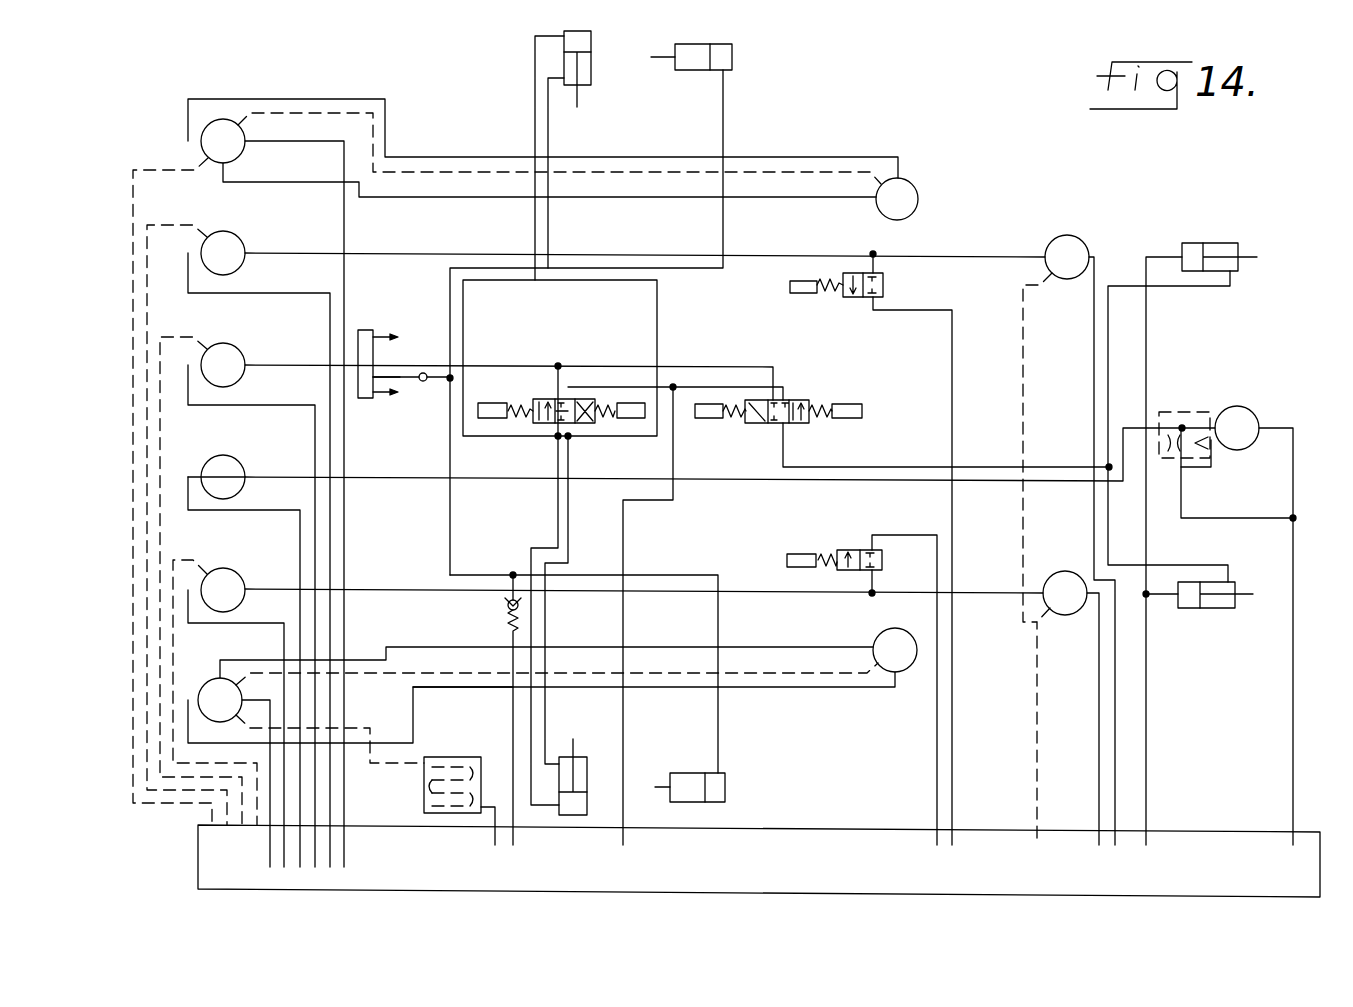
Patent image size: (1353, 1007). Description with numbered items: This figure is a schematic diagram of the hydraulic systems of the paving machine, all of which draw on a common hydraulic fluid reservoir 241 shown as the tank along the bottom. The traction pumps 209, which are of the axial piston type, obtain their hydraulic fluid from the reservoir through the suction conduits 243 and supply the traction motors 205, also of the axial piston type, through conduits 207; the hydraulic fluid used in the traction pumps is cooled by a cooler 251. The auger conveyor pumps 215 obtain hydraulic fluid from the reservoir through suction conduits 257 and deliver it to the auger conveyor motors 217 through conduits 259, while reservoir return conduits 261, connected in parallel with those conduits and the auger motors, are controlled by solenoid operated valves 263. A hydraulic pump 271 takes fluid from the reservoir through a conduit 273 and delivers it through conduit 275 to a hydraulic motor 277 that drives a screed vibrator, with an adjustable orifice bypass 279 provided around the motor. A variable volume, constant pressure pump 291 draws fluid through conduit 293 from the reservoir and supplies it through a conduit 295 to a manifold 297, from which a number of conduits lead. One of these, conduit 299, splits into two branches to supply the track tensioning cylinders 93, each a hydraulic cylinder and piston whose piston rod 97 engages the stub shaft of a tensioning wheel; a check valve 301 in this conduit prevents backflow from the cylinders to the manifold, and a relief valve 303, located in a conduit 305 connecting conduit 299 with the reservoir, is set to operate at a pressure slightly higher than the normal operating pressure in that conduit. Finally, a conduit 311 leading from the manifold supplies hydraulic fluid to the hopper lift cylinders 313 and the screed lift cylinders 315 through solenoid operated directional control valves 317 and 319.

The hydraulic cylinder and piston 93 is at (732, 55).
The piston rod 97 is at (660, 60).
The traction motors 205 is at (916, 192).
The conduits 207 is at (505, 157).
The traction pumps 209 is at (204, 147).
The auger conveyor pumps 215 is at (238, 247).
The auger conveyor motors 217 is at (1080, 240).
The hydraulic fluid reservoir 241 is at (895, 790).
The suction conduits 243 is at (344, 240).
The cooler 251 is at (422, 798).
The suction conduits 257 is at (272, 308).
The conduits 259 is at (795, 258).
The reservoir return conduits 261 is at (935, 505).
The solenoid operated valves 263 is at (883, 290).
The hydraulic pump 271 is at (238, 471).
The conduit 273 is at (276, 516).
The conduit 275 is at (465, 498).
The hydraulic motor 277 is at (1250, 410).
The adjustable orifice bypass 279 is at (1200, 465).
The variable volume, constant pressure pump 291 is at (238, 359).
The conduit 293 is at (292, 414).
The conduit 295 is at (312, 376).
The manifold 297 is at (365, 330).
The conduit 299 is at (382, 398).
The check valve 301 is at (423, 382).
The relief valve 303 is at (506, 604).
The conduit 305 is at (513, 712).
The conduit 311 is at (630, 370).
The hopper lift cylinders 313 is at (591, 37).
The screed lift cylinders 315 is at (1215, 243).
The solenoid operated directional control valve 317 is at (537, 397).
The solenoid operated directional control valve 319 is at (763, 432).